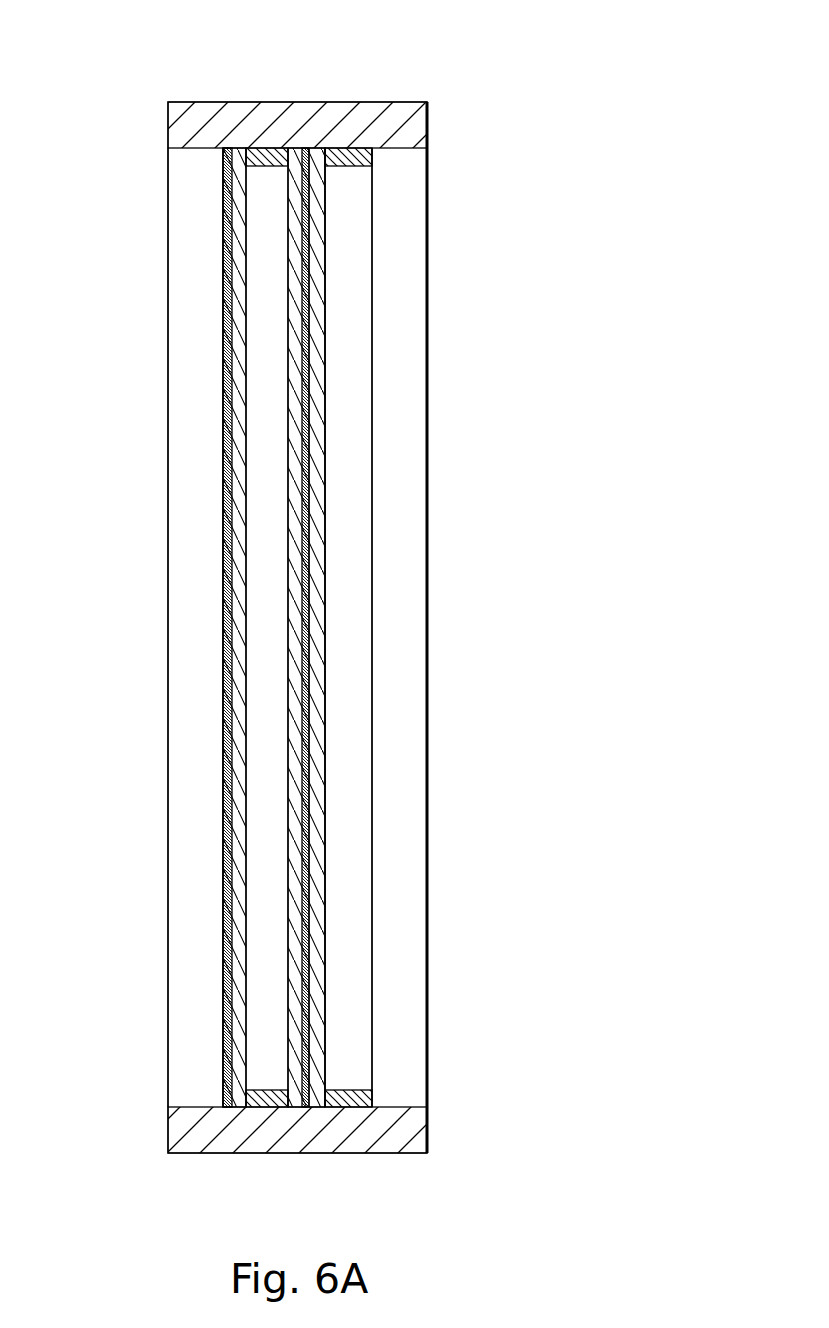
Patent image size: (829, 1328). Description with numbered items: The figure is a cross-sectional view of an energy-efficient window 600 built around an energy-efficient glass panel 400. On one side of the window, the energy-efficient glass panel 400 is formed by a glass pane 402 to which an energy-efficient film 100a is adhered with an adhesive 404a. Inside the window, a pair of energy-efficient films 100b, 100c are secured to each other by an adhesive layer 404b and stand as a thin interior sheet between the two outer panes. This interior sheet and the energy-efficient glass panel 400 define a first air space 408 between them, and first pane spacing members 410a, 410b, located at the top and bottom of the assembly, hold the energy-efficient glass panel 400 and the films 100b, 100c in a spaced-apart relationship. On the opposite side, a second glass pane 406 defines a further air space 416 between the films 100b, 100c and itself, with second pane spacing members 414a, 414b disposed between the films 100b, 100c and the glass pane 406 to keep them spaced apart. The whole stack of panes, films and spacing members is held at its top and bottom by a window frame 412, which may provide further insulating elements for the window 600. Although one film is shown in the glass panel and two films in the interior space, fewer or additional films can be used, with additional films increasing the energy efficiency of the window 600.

The window 600 is at (99, 70).
The energy-efficient glass panel 400 is at (168, 294).
The glass pane 402 is at (192, 346).
The adhesive 404a is at (222, 1100).
The adhesive layer 404b is at (315, 790).
The glass pane 406 is at (410, 322).
The first air space 408 is at (262, 424).
The first pane spacing member 410a is at (280, 160).
The first pane spacing member 410b is at (262, 1100).
The window frame 412 is at (416, 121).
The second pane spacing member 414a is at (360, 162).
The second pane spacing member 414b is at (335, 1106).
The air space 416 is at (350, 260).
The energy-efficient film 100a is at (228, 907).
The energy-efficient film 100b is at (305, 680).
The energy-efficient film 100c is at (315, 708).